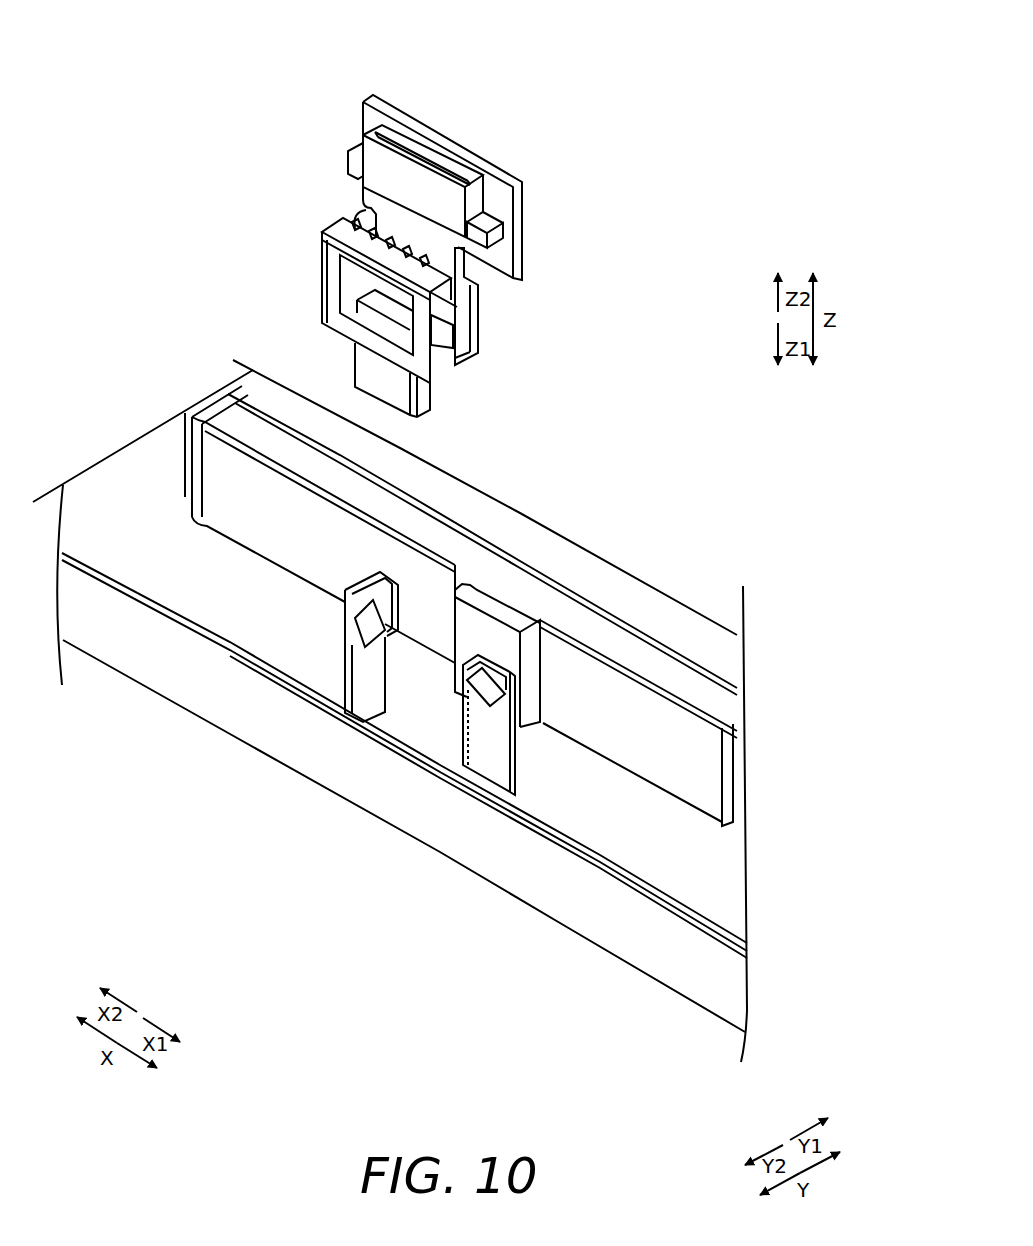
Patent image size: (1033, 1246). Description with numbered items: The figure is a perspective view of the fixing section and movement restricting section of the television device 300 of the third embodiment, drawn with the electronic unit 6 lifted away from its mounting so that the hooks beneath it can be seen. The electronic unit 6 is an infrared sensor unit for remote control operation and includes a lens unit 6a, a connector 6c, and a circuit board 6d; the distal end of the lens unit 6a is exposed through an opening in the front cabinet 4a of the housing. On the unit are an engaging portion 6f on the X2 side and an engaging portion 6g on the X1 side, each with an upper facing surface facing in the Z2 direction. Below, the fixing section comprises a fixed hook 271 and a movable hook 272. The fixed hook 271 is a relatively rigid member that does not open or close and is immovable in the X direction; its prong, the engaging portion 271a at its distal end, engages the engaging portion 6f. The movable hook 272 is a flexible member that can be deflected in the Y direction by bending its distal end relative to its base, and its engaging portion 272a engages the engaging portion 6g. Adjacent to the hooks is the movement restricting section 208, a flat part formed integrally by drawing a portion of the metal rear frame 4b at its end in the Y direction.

The television device 300 is at (597, 52).
The electronic unit 6 is at (517, 115).
The lens unit 6a is at (423, 402).
The connector 6c is at (478, 204).
The circuit board 6d is at (517, 228).
The engaging portion 6f is at (366, 222).
The engaging portion 6g is at (482, 280).
The front cabinet 4a is at (258, 762).
The rear frame 4b is at (239, 565).
The movement restricting section 208 is at (485, 640).
The fixed hook 271 is at (330, 722).
The engaging portion 271a is at (352, 648).
The movable hook 272 is at (498, 786).
The engaging portion 272a is at (483, 700).